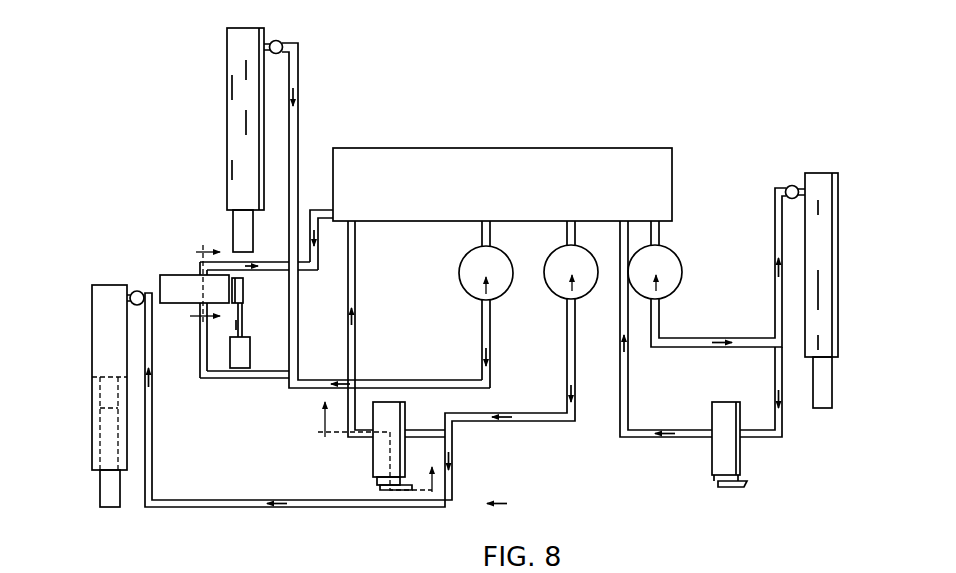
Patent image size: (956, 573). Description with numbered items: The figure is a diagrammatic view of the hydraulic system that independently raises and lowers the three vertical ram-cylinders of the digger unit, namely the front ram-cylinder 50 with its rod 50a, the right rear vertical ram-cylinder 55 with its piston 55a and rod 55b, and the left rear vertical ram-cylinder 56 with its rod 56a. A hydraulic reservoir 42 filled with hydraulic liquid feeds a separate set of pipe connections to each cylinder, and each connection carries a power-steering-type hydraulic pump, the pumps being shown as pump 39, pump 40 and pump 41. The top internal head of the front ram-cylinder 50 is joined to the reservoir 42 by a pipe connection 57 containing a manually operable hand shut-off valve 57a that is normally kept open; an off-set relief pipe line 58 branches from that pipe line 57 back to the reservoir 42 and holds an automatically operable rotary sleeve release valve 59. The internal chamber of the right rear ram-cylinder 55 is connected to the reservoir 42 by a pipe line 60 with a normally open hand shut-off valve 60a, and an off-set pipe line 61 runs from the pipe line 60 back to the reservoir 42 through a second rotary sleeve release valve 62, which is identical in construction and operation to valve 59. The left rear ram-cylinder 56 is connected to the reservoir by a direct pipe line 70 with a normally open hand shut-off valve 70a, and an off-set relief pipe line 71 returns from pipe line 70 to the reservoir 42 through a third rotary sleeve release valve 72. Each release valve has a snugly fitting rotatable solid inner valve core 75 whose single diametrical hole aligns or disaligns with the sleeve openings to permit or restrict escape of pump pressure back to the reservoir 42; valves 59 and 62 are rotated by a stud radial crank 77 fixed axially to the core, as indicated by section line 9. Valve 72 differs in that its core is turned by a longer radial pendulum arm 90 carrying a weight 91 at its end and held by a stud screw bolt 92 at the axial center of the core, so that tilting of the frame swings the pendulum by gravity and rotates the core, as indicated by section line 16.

The section line 9- 9 is at (369, 447).
The section line 16- 16 is at (197, 276).
The hydraulic pump 39 is at (486, 273).
The hydraulic pump 40 is at (571, 272).
The hydraulic pump 41 is at (655, 272).
The hydraulic reservoir 42 is at (645, 151).
The front ram-cylinder 50 is at (835, 258).
The front ram-cylinder piston rod 50a is at (821, 384).
The right rear vertical ram-cylinder 55 is at (92, 438).
The ram-cylinder piston 55a is at (92, 378).
The ram-cylinder piston rod 55b is at (100, 500).
The left rear vertical ram-cylinder 56 is at (237, 125).
The left rear ram-cylinder piston rod 56a is at (240, 228).
The pipe connection 57 is at (661, 237).
The hand shut-off valve 57a is at (792, 185).
The off-set relief pipe line 58 is at (627, 407).
The rotary sleeve release valve 59 is at (742, 455).
The pipe line connection 60 is at (566, 237).
The hand shut-off valve 60a is at (134, 291).
The off-set pipe line 61 is at (357, 299).
The rotary sleeve release valve 62 is at (372, 457).
The direct pipe line connection 70 is at (300, 74).
The hand shut-off valve 70a is at (283, 44).
The off-set relief pipe line 71 is at (258, 264).
The rotary sleeve release valve 72 is at (176, 277).
The valve core 75 is at (238, 325).
The stud radial crank 77 is at (752, 487).
The pendulum arm 90 is at (243, 318).
The weight 91 is at (251, 350).
The stud screw bolt 92 is at (244, 290).